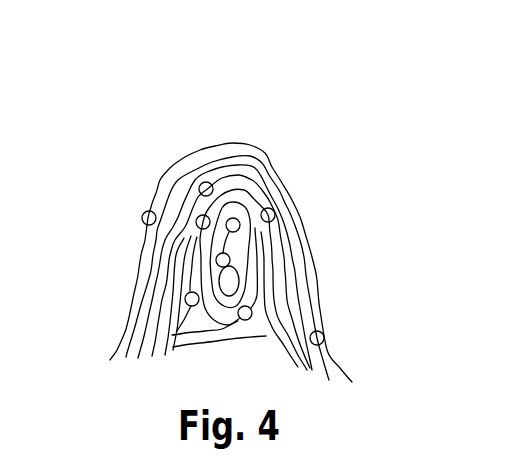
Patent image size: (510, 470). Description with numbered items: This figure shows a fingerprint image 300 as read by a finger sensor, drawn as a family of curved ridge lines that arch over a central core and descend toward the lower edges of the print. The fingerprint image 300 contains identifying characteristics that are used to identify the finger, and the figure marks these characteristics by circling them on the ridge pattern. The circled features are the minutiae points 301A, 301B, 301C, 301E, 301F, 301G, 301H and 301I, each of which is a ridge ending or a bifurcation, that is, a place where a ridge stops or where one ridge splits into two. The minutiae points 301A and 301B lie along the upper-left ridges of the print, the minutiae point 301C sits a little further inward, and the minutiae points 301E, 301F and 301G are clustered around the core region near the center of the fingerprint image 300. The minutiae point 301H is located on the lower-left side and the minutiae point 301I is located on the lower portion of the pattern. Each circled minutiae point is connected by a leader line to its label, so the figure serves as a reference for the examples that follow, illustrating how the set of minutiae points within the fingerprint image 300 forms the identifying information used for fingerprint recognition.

The fingerprint image 300 is at (350, 112).
The minutiae point 301A is at (146, 214).
The minutiae point 301B is at (205, 182).
The minutiae point 301C is at (196, 226).
The minutiae point 301E is at (238, 220).
The minutiae point 301F is at (275, 215).
The minutiae point 301G is at (230, 260).
The minutiae point 301H is at (185, 299).
The minutiae point 301I is at (252, 310).